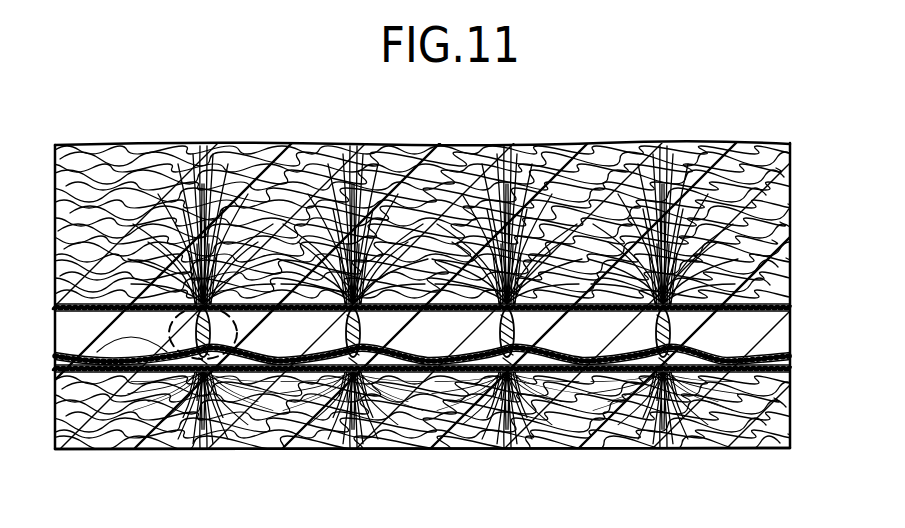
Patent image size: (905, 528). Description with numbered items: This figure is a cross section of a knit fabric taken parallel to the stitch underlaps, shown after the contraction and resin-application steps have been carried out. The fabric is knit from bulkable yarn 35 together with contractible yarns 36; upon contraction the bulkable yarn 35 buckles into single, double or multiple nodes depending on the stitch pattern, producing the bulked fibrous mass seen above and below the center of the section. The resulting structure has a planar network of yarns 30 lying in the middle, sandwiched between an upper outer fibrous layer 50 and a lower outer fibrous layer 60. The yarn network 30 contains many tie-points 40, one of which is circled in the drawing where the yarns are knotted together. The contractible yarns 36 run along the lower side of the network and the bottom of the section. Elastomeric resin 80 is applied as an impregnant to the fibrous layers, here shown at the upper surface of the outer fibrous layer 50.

The elastomeric resin 80 is at (377, 150).
The bulkable yarn 35 is at (533, 150).
The upper outer fibrous layer 50 is at (446, 200).
The planar network of yarns 30 is at (435, 337).
The tie-point 40 is at (100, 336).
The contractible yarns 36 is at (383, 450).
The lower outer fibrous layer 60 is at (800, 374).